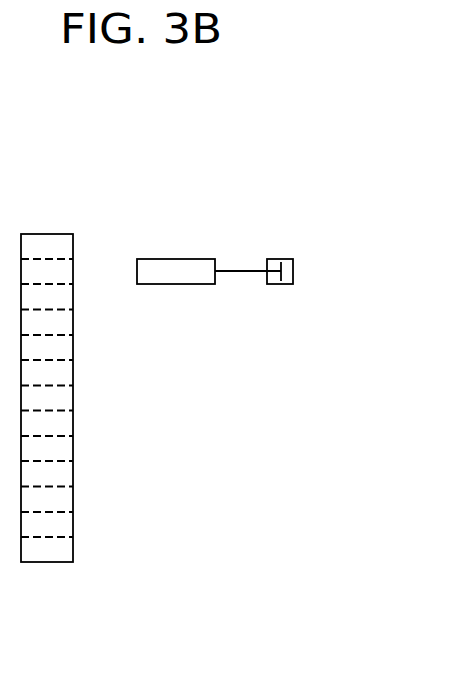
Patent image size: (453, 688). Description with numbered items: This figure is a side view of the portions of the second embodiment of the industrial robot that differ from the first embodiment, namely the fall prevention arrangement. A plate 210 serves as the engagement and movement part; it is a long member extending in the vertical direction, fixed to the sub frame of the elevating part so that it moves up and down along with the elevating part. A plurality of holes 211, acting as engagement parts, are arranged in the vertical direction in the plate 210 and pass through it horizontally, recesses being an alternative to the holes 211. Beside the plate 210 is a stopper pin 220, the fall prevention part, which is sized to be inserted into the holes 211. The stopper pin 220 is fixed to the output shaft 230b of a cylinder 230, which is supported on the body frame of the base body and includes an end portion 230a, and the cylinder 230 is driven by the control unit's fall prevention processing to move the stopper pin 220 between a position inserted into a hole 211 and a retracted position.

The plate 210 is at (87, 436).
The holes 211 is at (67, 526).
The stopper pin 220 is at (178, 285).
The cylinder 230 is at (297, 274).
The sensor 230a is at (281, 285).
The output shaft 230b is at (248, 268).